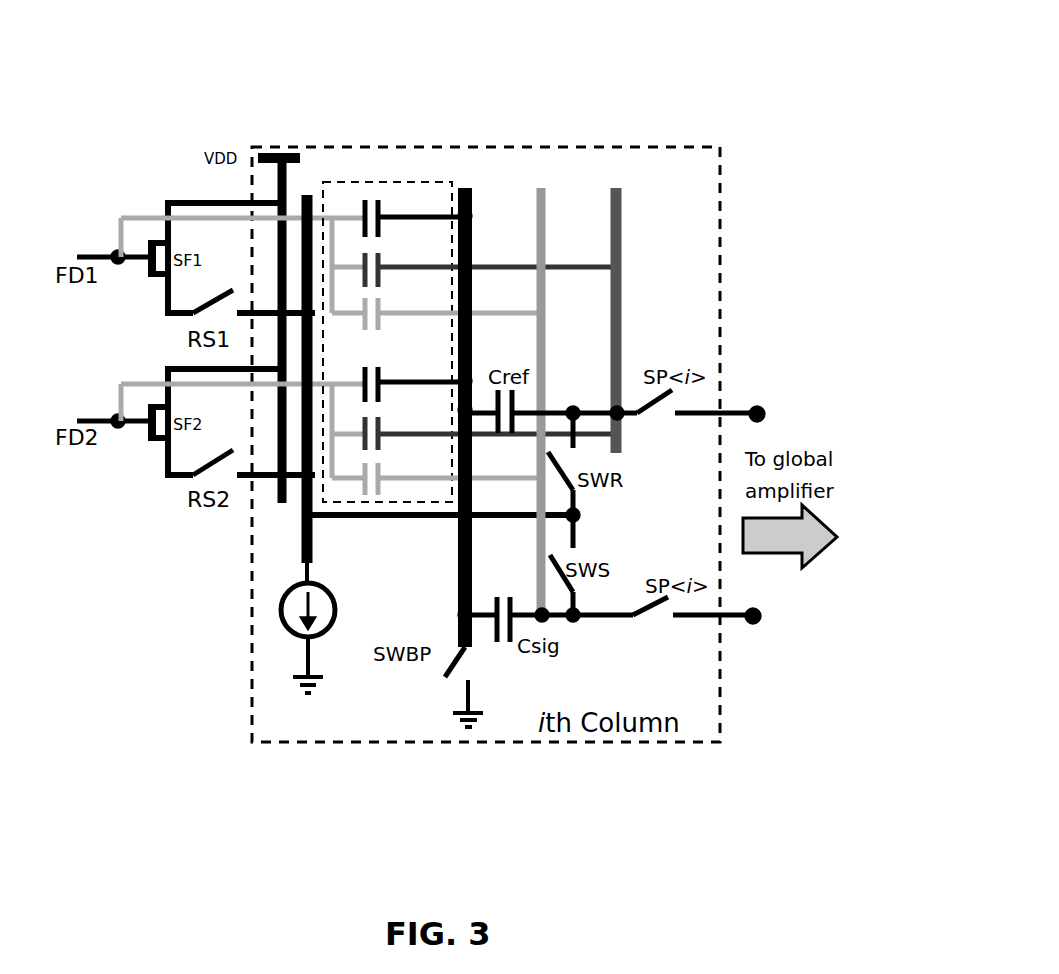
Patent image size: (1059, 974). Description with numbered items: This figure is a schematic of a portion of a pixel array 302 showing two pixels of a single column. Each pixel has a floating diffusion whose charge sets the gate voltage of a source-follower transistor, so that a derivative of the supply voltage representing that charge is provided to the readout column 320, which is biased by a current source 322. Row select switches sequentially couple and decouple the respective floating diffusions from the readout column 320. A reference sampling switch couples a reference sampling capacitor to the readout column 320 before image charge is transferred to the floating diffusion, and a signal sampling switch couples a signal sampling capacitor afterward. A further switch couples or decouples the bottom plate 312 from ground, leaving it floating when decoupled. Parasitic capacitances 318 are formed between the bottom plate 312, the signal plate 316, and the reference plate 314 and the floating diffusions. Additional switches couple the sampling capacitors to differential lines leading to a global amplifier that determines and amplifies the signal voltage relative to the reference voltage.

The portion of a pixel array 302 is at (808, 145).
The bottom plate 312 is at (471, 176).
The reference plate 314 is at (622, 180).
The signal plate 316 is at (551, 172).
The parasitic capacitances 318 is at (385, 182).
The readout column 320 is at (258, 538).
The current source 322 is at (258, 633).